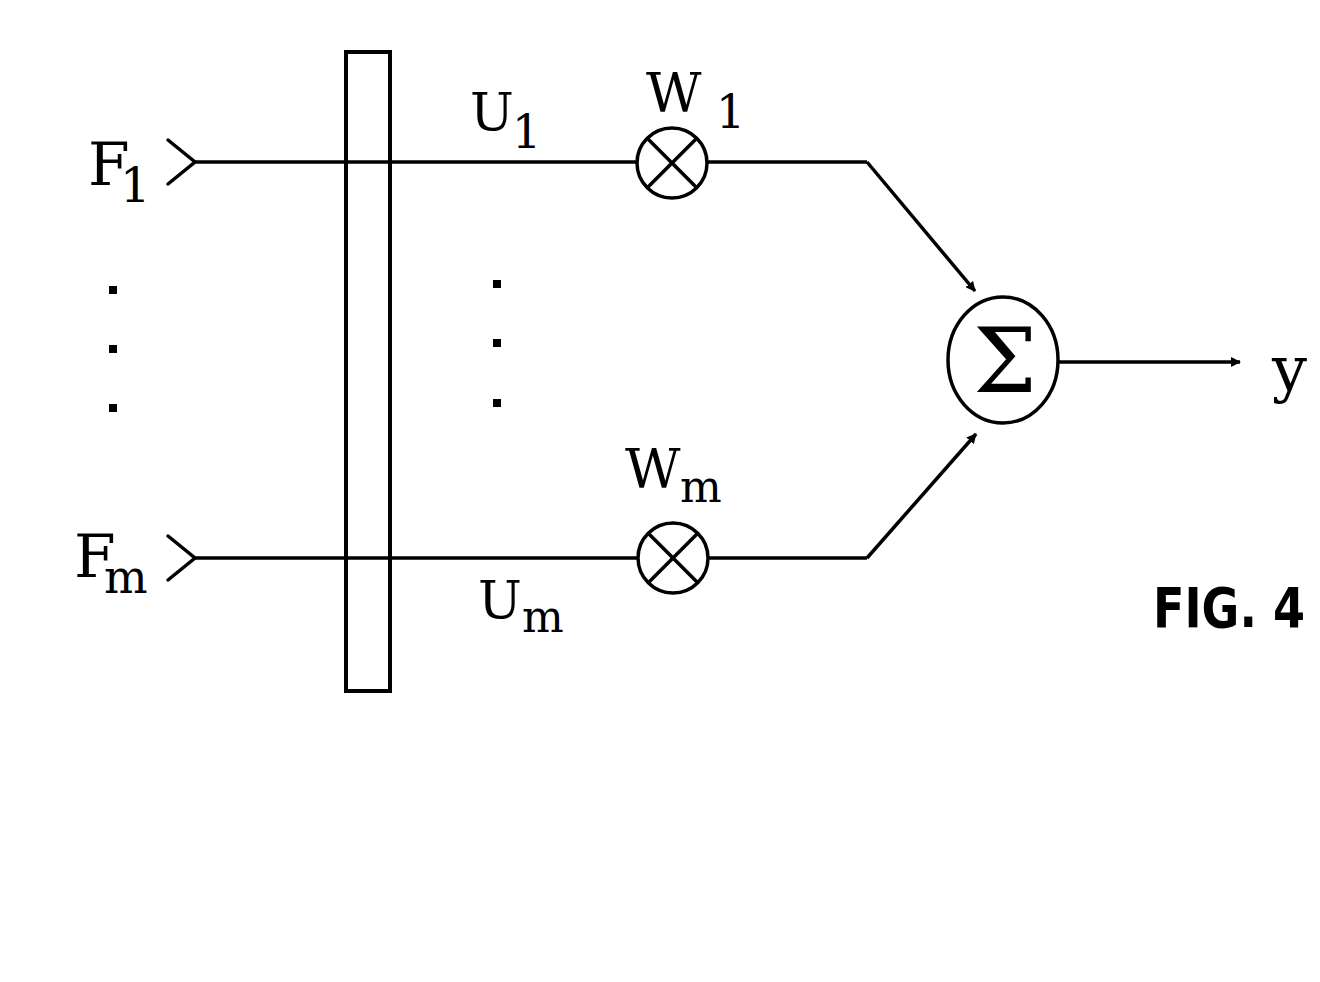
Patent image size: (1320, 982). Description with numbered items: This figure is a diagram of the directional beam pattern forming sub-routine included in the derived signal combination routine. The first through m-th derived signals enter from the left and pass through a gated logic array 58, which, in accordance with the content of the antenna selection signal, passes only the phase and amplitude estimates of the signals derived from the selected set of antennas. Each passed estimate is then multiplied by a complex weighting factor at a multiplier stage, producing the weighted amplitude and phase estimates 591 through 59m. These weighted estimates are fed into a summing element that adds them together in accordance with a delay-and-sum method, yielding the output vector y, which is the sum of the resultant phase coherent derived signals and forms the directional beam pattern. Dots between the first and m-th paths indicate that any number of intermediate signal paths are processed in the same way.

The gated logic array 58 is at (355, 693).
The weighted amplitude and phase estimate 591 is at (837, 163).
The weighted amplitude and phase estimate 59m is at (823, 560).